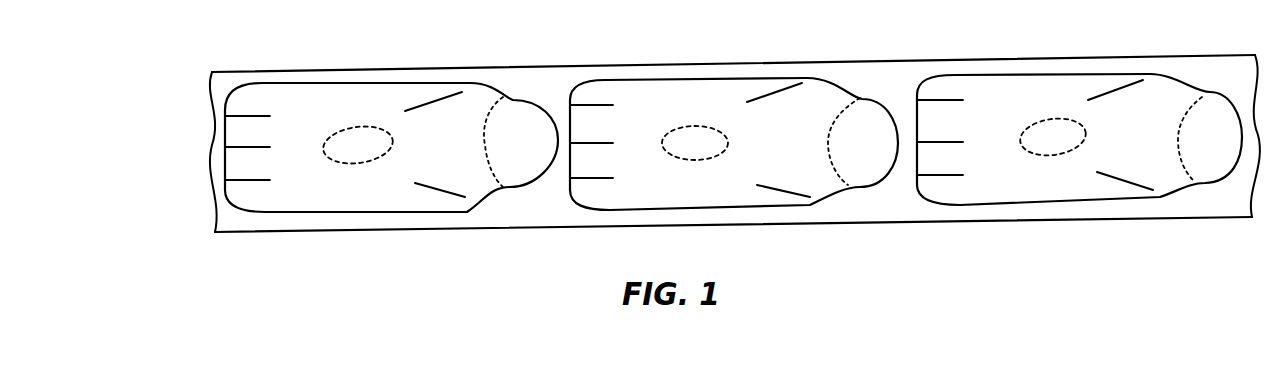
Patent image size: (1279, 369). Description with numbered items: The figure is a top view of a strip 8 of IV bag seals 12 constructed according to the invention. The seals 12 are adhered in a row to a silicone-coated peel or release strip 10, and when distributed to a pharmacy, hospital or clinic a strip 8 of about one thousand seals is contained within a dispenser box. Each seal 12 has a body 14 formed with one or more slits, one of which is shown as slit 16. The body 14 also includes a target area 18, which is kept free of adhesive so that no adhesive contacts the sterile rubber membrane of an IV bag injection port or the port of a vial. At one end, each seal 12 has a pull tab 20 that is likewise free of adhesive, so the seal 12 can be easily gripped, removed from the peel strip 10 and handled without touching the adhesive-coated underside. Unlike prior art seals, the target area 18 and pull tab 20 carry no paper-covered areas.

The strip 8 is at (200, 61).
The peel strip 10 is at (548, 75).
The seal 12 is at (341, 82).
The body 14 is at (408, 90).
The slit 16 is at (440, 193).
The target area 18 is at (367, 155).
The pull tab 20 is at (520, 133).